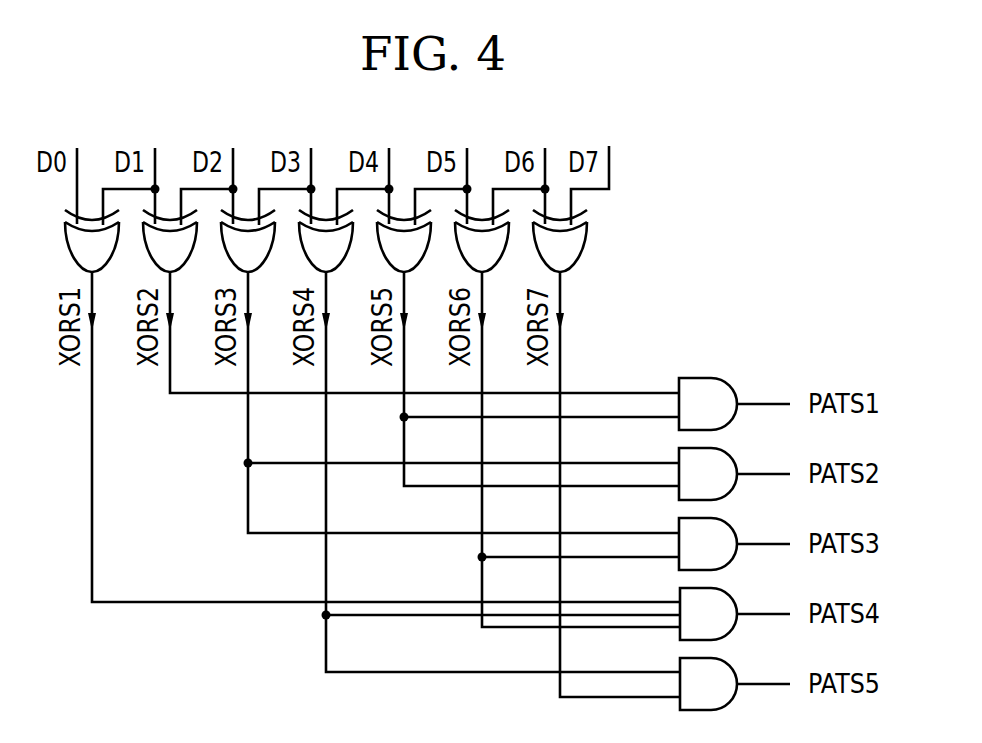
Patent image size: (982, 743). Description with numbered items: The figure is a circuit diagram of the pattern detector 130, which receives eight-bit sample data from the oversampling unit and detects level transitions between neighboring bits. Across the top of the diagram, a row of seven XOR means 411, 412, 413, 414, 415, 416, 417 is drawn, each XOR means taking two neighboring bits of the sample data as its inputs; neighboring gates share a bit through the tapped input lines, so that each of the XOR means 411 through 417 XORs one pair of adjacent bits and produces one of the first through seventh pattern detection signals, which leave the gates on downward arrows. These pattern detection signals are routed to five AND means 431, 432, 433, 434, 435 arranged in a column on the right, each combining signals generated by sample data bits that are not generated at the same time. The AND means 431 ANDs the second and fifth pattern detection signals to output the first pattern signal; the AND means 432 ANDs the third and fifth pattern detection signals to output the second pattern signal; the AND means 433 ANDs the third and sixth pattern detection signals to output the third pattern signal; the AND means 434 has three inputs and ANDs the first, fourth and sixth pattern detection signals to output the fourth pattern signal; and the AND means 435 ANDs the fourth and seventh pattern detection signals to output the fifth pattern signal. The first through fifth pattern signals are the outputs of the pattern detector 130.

The pattern detector 130 is at (728, 141).
The XOR means 411 is at (92, 241).
The XOR means 412 is at (170, 241).
The XOR means 413 is at (248, 241).
The XOR means 414 is at (326, 241).
The XOR means 415 is at (404, 241).
The XOR means 416 is at (482, 241).
The XOR means 417 is at (560, 241).
The AND means 431 is at (734, 404).
The AND means 432 is at (734, 474).
The AND means 433 is at (734, 544).
The AND means 434 is at (735, 614).
The AND means 435 is at (735, 684).